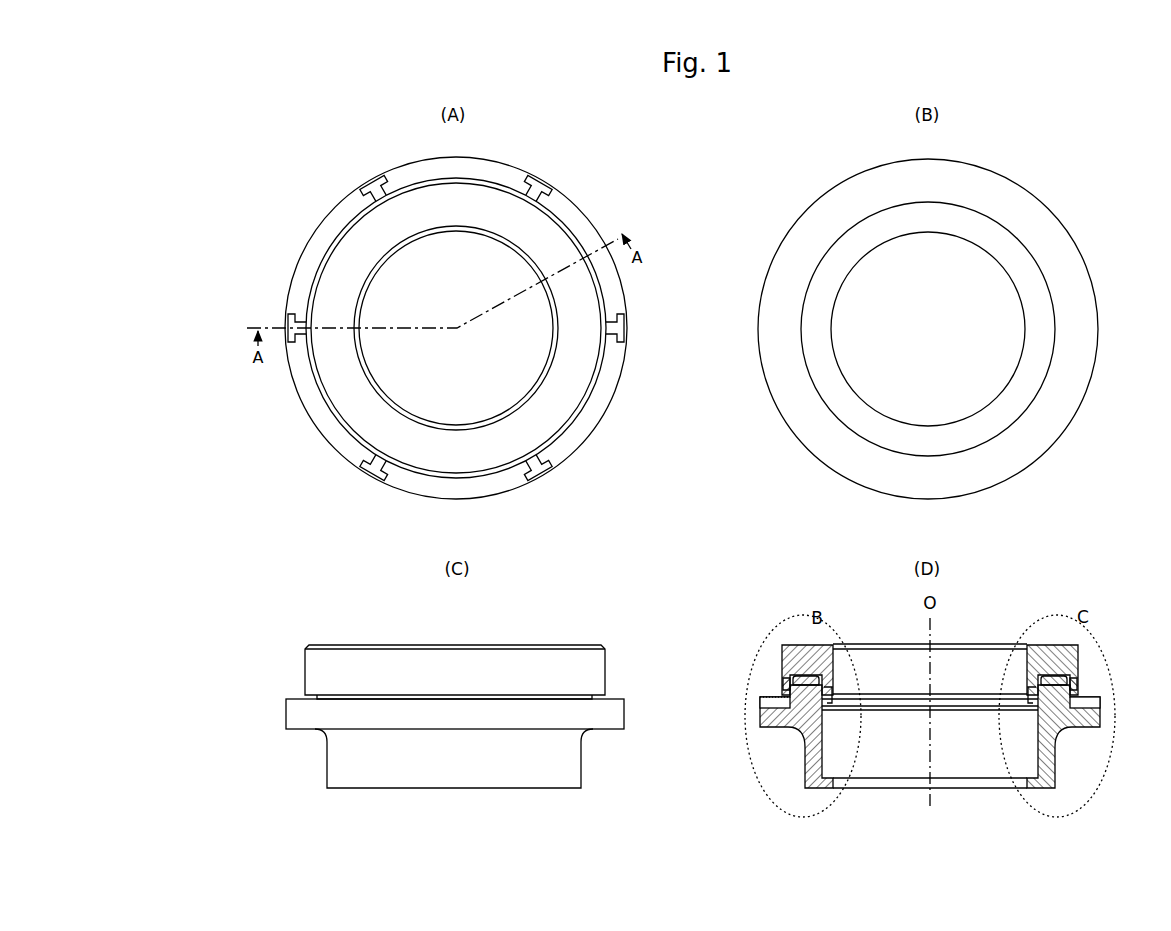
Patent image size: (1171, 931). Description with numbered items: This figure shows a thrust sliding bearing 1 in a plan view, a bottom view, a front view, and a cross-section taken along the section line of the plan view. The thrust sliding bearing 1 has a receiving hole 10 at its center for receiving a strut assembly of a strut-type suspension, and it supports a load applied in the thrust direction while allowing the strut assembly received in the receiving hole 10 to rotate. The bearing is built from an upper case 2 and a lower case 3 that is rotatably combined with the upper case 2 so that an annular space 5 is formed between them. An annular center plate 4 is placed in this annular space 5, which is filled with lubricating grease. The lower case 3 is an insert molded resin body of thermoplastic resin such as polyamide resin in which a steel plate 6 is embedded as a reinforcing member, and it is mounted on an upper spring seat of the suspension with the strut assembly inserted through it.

The thrust sliding bearing 1 is at (616, 145).
The upper case 2 is at (480, 200).
The lower case 3 is at (562, 210).
The annular center plate 4 is at (810, 674).
The annular space 5 is at (783, 681).
The steel plate 6 is at (760, 713).
The receiving hole 10 is at (407, 274).